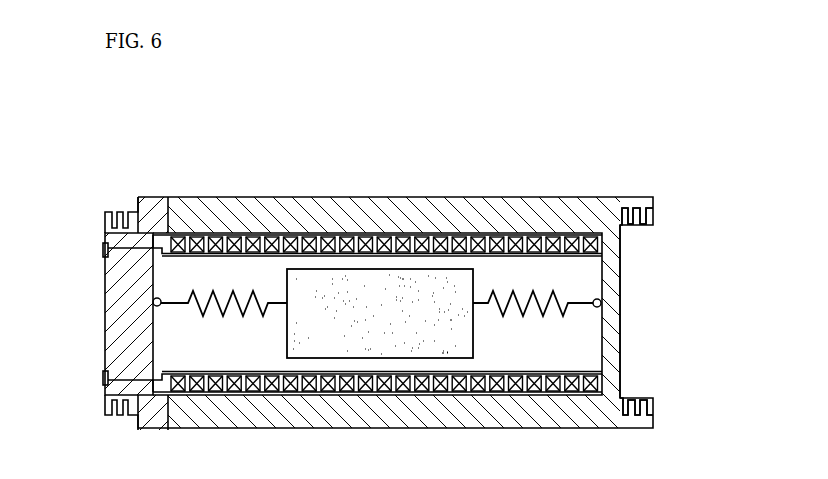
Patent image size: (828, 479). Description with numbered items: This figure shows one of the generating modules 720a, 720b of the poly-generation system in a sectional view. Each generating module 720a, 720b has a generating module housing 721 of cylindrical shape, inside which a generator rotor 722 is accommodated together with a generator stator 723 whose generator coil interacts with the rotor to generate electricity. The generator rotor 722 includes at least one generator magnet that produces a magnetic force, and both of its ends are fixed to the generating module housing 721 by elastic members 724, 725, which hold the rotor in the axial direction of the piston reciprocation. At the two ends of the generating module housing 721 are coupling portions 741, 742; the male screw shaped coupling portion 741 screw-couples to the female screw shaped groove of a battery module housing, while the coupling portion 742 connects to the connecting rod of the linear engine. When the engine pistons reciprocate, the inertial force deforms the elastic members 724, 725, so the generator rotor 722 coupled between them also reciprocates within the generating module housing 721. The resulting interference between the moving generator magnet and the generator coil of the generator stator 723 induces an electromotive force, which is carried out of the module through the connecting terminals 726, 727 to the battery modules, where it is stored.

The generating module 720a is at (600, 110).
The generating module 720b is at (374, 279).
The generating module housing 721 is at (513, 196).
The generator rotor 722 is at (365, 358).
The generator stator 723 is at (557, 394).
The elastic member 724 is at (575, 292).
The elastic member 725 is at (223, 318).
The connecting terminal 726 is at (103, 250).
The connecting terminal 727 is at (103, 376).
The coupling portion 741 is at (105, 315).
The coupling portion 742 is at (637, 323).